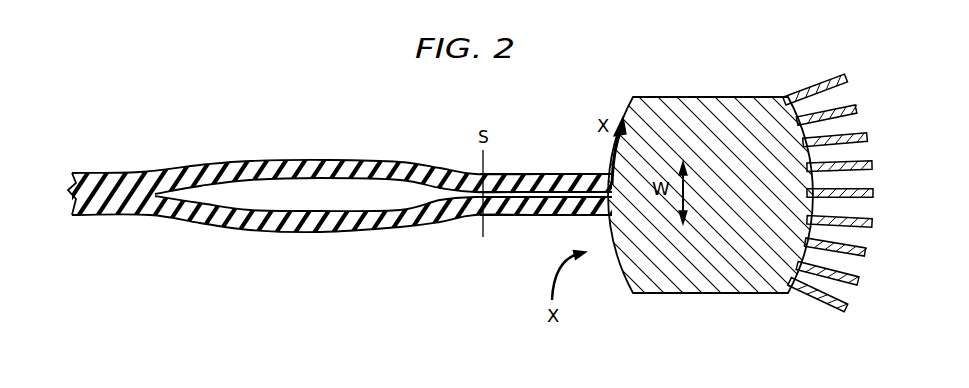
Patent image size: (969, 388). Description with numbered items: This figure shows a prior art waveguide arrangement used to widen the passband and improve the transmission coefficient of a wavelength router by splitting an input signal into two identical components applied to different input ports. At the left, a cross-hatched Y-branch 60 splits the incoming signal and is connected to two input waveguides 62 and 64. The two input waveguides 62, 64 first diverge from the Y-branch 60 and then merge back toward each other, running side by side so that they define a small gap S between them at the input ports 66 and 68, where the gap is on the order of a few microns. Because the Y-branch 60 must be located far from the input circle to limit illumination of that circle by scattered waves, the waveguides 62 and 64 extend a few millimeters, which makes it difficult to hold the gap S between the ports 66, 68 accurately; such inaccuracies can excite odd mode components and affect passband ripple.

The Y-branch 60 is at (185, 166).
The input waveguide 62 is at (340, 160).
The input waveguide 64 is at (330, 230).
The input port 66 is at (568, 182).
The input port 68 is at (563, 205).